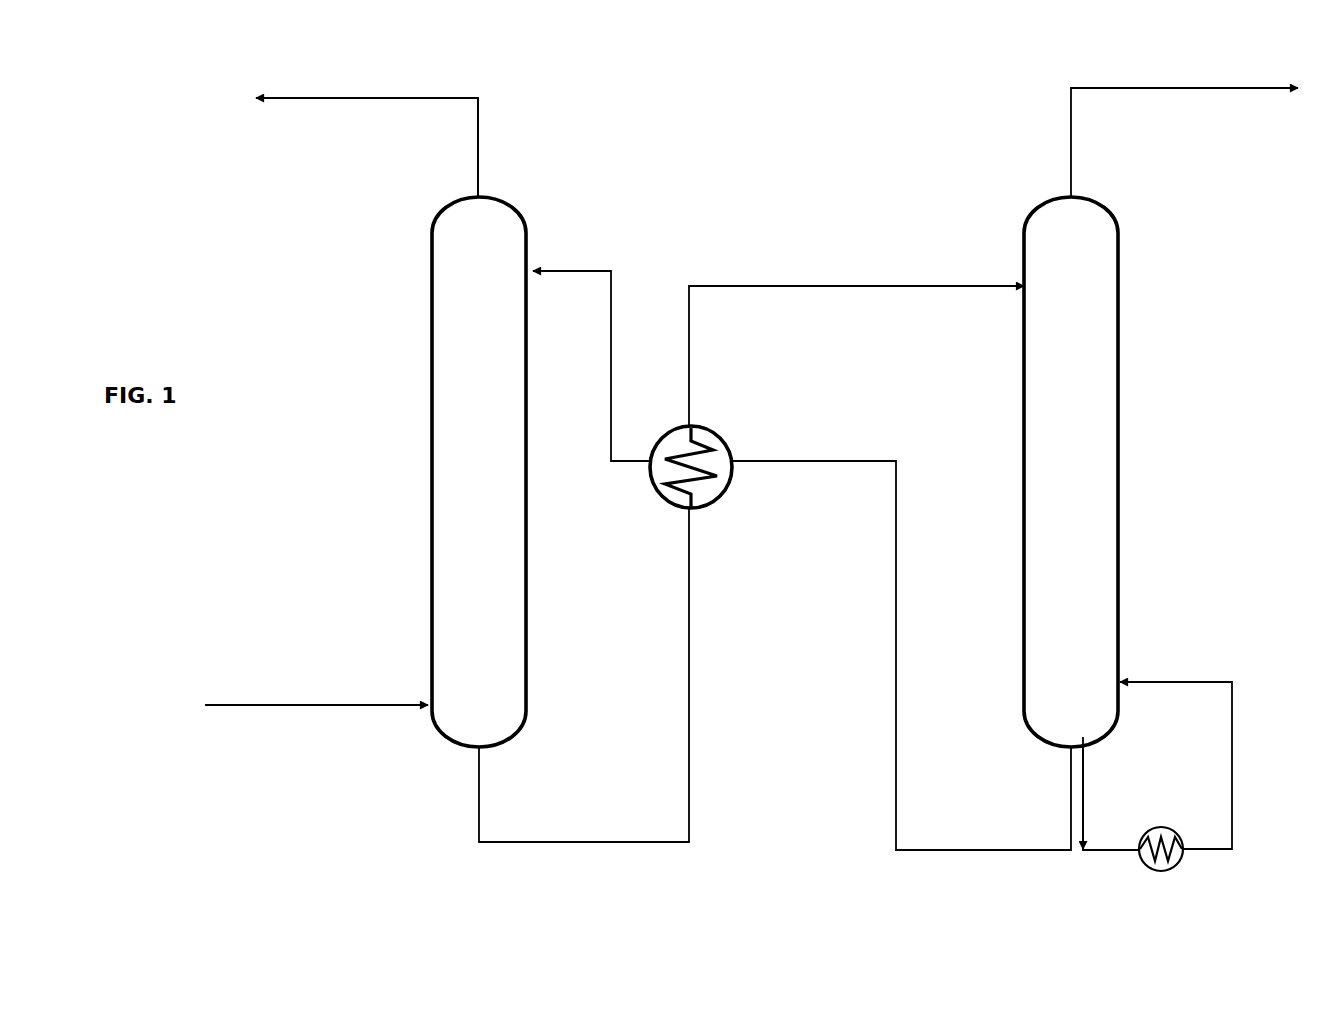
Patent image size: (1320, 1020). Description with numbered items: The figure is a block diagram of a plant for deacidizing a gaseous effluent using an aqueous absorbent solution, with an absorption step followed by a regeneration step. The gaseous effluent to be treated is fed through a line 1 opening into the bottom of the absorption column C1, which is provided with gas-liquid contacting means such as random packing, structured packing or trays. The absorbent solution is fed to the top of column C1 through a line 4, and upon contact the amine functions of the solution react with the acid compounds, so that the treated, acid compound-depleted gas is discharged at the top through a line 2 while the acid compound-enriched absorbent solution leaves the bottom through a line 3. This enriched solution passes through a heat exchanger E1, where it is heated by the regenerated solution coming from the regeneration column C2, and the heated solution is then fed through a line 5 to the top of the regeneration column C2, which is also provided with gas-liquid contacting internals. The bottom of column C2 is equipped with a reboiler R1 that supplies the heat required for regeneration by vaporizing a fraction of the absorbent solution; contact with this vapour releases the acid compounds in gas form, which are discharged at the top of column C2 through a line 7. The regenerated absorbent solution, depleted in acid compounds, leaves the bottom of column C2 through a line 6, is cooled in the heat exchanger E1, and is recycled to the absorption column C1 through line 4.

The line 1 is at (301, 705).
The line 2 is at (333, 98).
The line 3 is at (590, 842).
The line 4 is at (579, 270).
The line 5 is at (930, 286).
The line 6 is at (951, 853).
The line 7 is at (1170, 88).
The absorption column C1 is at (527, 551).
The regeneration column C2 is at (1119, 481).
The heat exchanger E1 is at (707, 432).
The reboiler R1 is at (1160, 868).